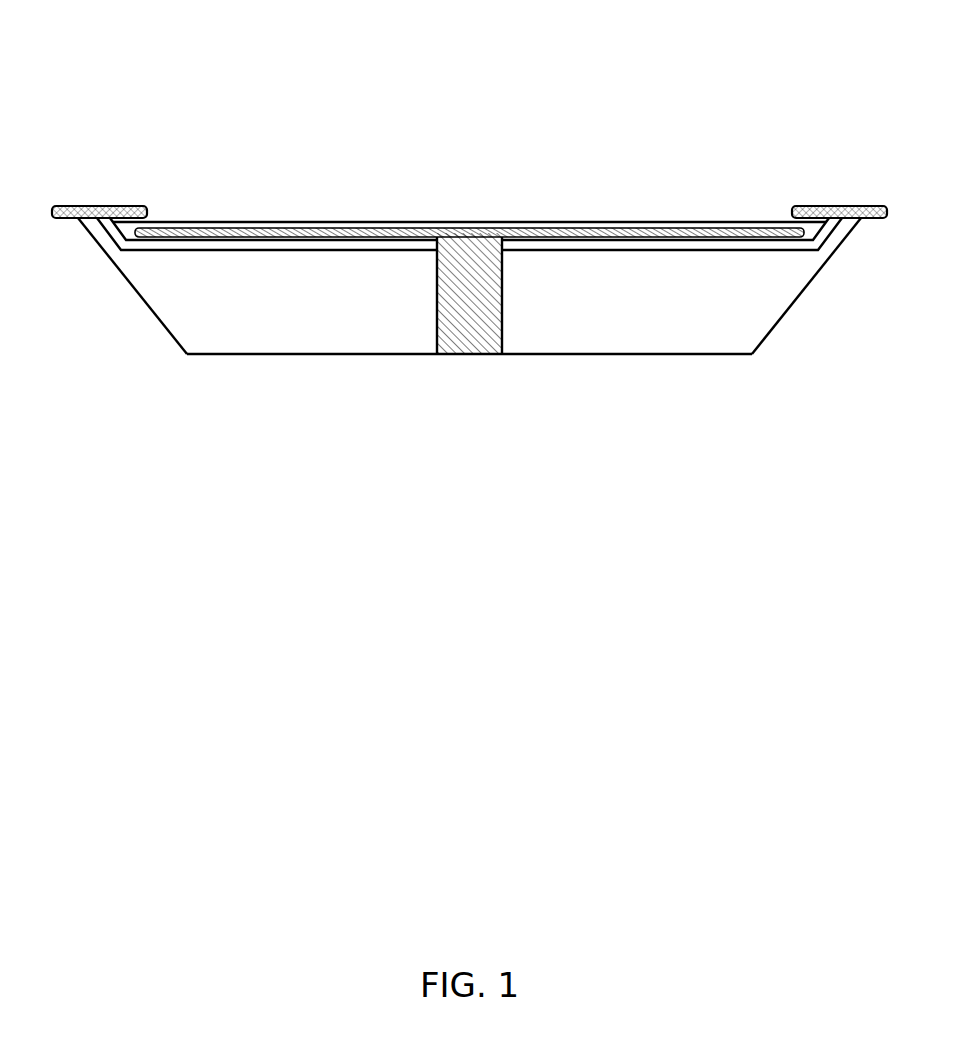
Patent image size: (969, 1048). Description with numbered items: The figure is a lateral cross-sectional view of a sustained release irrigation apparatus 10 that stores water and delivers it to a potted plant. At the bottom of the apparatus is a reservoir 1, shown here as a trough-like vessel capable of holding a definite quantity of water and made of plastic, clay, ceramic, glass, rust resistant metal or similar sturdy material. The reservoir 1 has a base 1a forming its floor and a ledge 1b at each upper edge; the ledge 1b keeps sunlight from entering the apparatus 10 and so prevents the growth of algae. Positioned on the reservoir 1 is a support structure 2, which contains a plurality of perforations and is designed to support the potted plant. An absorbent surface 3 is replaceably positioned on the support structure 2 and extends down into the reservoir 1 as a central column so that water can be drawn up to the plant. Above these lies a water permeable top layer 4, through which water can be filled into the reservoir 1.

The sustained release irrigation apparatus 10 is at (503, 84).
The reservoir 1 is at (745, 325).
The base 1a is at (615, 355).
The ledge 1b is at (92, 205).
The support structure 2 is at (325, 250).
The absorbent surface 3 is at (467, 343).
The water permeable top layer 4 is at (377, 222).